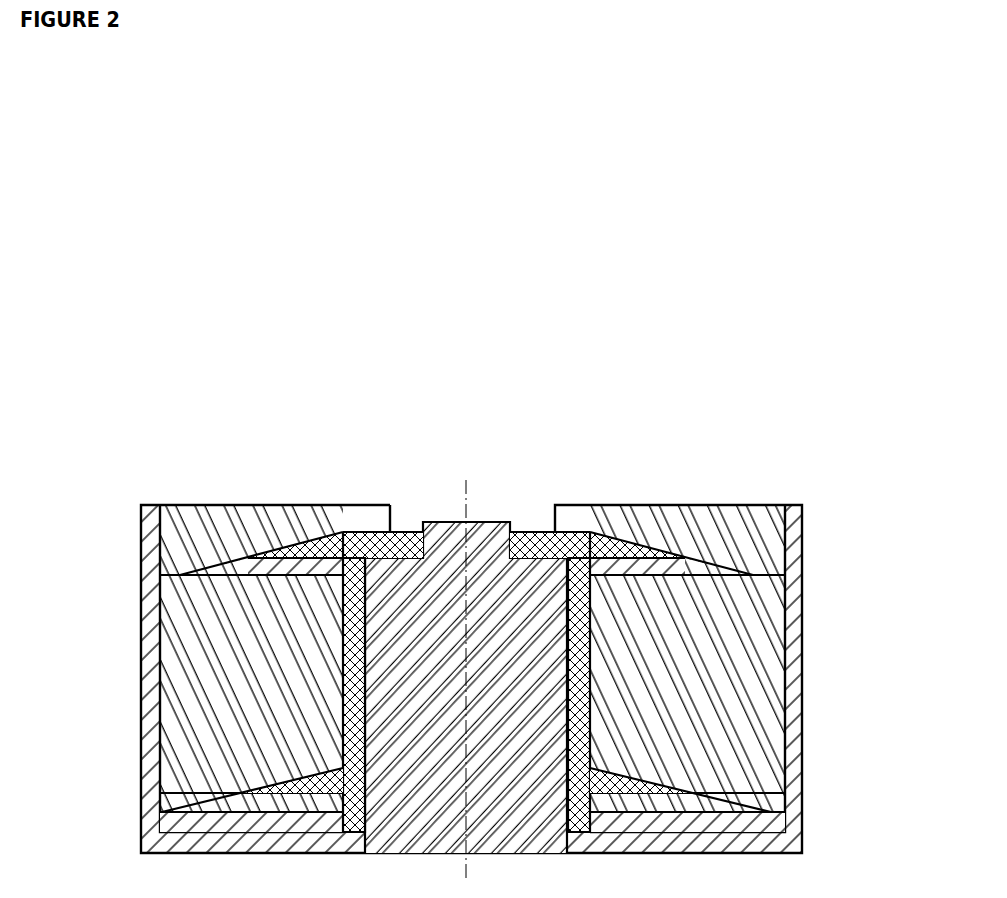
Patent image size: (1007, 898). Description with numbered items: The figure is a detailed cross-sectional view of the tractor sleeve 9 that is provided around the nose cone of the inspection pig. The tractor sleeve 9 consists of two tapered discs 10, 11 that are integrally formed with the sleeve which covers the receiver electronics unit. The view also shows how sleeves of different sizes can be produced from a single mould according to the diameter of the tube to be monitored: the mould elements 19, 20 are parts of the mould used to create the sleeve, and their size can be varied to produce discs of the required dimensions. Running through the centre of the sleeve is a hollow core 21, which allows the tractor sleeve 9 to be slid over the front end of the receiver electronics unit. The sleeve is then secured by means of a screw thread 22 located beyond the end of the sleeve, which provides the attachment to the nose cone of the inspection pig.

The tractor sleeve 9 is at (592, 672).
The tapered disc 10 is at (298, 537).
The tapered disc 11 is at (228, 791).
The mould element 19 is at (175, 809).
The mould element 20 is at (180, 575).
The hollow core 21 is at (453, 570).
The screw thread 22 is at (450, 507).